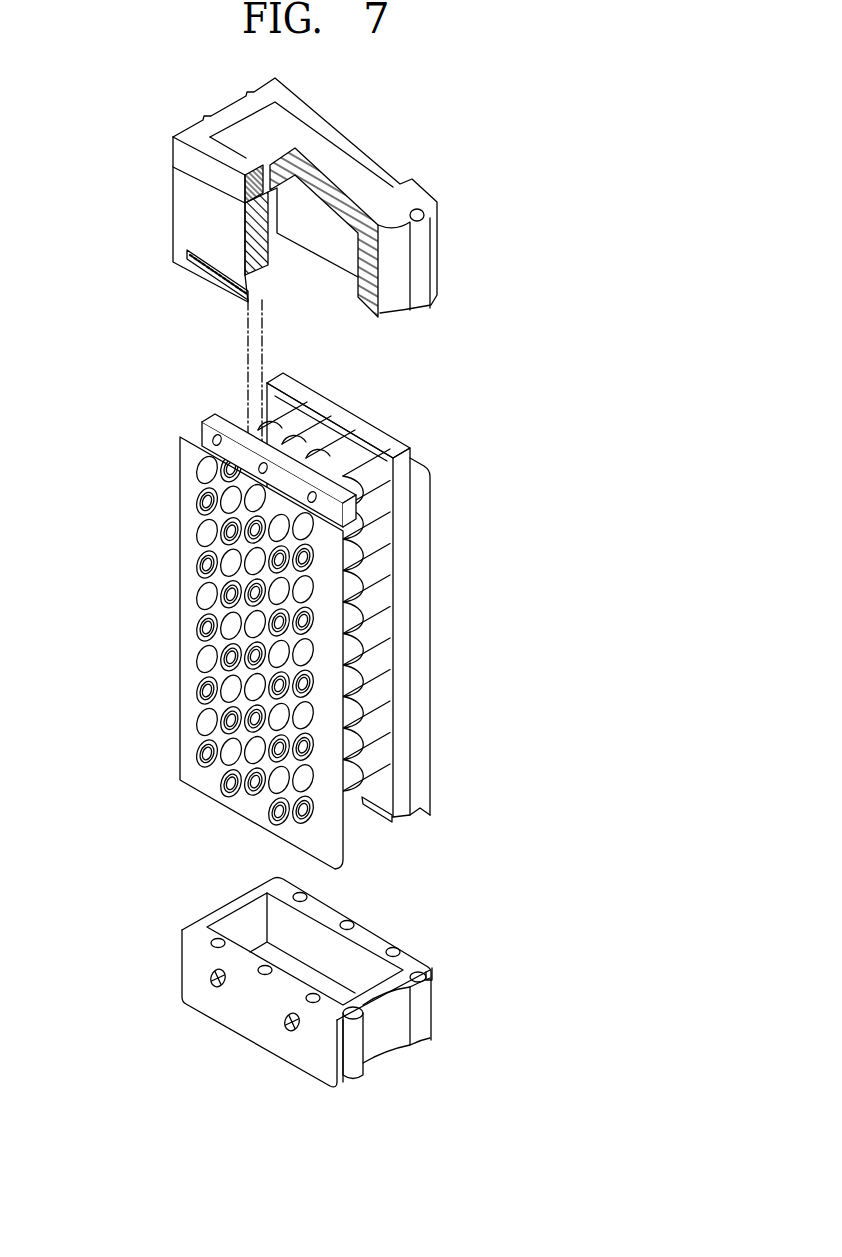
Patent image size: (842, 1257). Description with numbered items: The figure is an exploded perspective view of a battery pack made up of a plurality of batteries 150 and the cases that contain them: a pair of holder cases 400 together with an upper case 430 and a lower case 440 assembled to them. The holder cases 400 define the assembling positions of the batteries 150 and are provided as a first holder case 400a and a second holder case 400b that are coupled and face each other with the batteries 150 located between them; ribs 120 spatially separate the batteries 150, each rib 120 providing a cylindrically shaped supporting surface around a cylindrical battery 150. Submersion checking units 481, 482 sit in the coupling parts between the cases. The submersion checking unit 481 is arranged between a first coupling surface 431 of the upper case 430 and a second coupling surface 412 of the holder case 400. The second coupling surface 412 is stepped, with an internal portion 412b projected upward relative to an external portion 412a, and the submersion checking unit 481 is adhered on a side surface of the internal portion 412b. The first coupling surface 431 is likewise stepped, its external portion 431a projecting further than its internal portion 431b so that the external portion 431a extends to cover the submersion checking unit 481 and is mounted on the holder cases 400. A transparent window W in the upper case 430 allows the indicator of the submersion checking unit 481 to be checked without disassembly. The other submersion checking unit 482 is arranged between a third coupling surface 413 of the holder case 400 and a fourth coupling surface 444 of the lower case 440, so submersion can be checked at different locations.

The upper case 430 is at (313, 274).
The first coupling surface 431 is at (319, 309).
The external portion 431a is at (250, 303).
The internal portion 431b is at (270, 272).
The transparent window W is at (216, 280).
The holder cases 400 is at (292, 625).
The first holder case 400a is at (188, 585).
The second holder case 400b is at (432, 517).
The submersion checking unit 481 is at (242, 438).
The second coupling surface 412 is at (187, 640).
The external portion 412a is at (237, 467).
The internal portion 412b is at (204, 468).
The batteries 150 is at (207, 725).
The ribs 120 is at (382, 770).
The third coupling surface 413 is at (374, 810).
The lower case 440 is at (293, 990).
The fourth coupling surface 444 is at (233, 953).
The submersion checking unit 482 is at (399, 948).